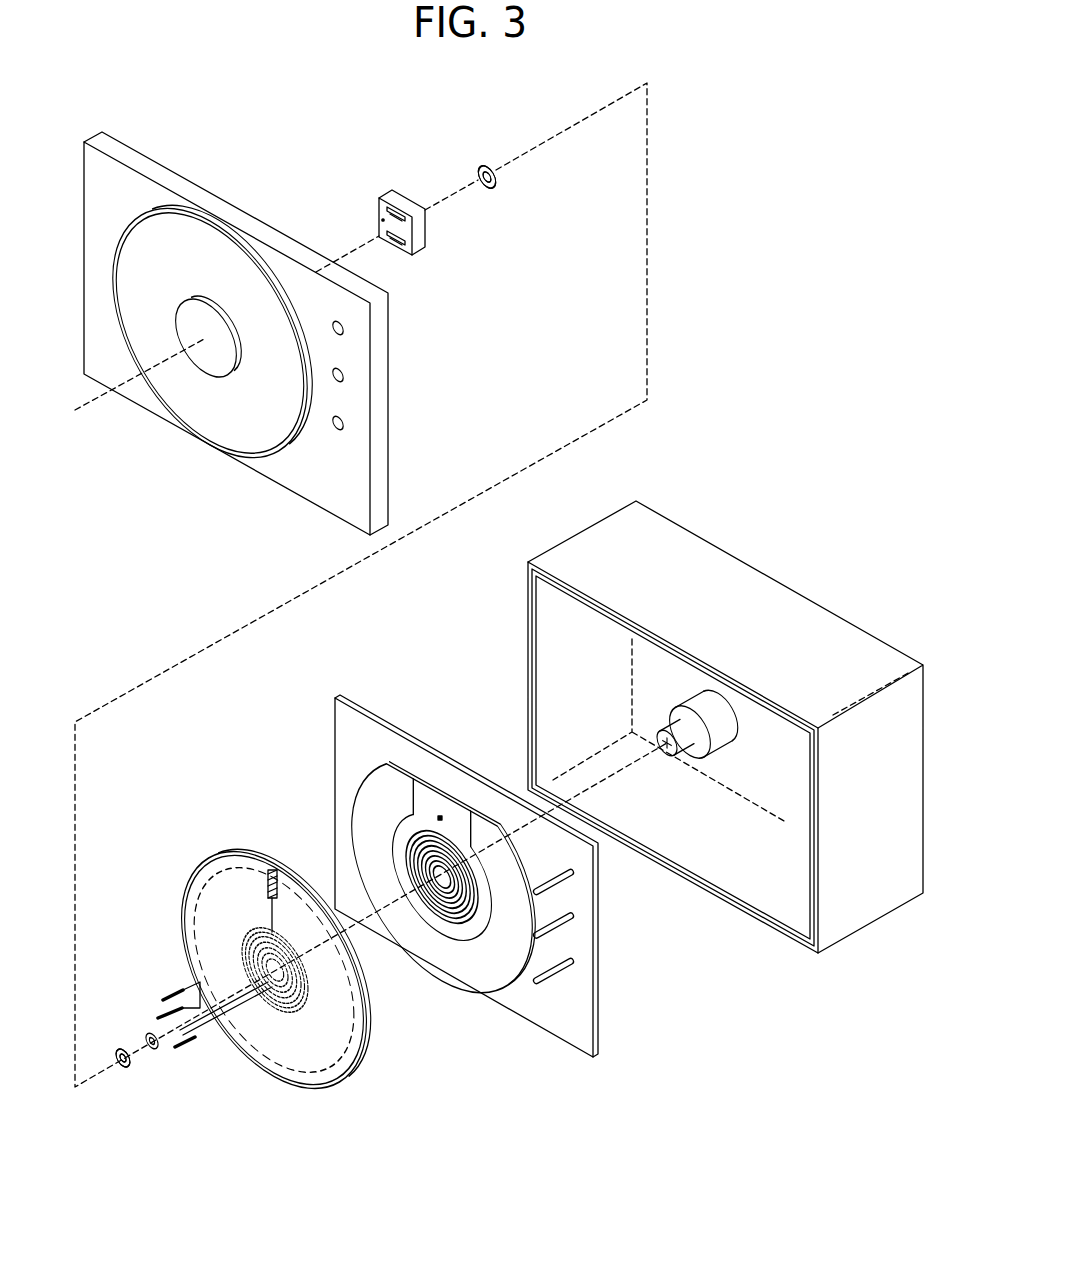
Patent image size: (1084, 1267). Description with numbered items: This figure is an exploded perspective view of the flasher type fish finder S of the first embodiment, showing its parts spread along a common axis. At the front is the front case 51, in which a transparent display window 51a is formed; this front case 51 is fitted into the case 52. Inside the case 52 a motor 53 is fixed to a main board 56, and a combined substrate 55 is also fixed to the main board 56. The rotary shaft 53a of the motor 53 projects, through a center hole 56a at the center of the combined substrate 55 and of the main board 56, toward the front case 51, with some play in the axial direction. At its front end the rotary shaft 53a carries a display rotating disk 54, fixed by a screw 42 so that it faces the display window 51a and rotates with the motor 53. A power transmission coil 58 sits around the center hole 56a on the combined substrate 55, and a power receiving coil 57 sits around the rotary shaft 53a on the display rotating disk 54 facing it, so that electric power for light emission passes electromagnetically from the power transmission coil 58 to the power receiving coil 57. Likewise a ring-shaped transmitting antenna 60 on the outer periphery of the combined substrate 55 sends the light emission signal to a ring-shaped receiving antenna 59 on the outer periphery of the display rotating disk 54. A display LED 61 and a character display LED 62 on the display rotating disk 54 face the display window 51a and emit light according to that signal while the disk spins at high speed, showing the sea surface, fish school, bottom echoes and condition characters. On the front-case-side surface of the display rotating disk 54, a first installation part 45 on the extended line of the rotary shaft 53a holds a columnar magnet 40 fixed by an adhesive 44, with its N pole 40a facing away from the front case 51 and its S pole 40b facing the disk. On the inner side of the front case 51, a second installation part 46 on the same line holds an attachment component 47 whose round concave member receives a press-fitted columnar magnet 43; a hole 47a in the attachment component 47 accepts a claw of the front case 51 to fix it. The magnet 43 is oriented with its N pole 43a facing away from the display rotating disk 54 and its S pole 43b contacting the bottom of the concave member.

The flasher type fish finder S is at (851, 229).
The magnet 40 is at (125, 1051).
The N pole 40a is at (114, 1053).
The S pole 40b is at (131, 1066).
The screw 42 is at (170, 993).
The magnet 43 is at (483, 170).
The N pole 43a is at (497, 167).
The S pole 43b is at (483, 187).
The adhesive 44 is at (158, 1046).
The first installation part 45 is at (250, 962).
The second installation part 46 is at (208, 365).
The attachment component 47 is at (393, 197).
The hole 47a is at (400, 253).
The front case 51 is at (275, 467).
The transparent display window 51a is at (288, 427).
The case 52 is at (845, 918).
The motor 53 is at (727, 732).
The rotary shaft 53a is at (675, 763).
The display rotating disk 54 is at (367, 1055).
The combined substrate 55 is at (475, 816).
The main board 56 is at (572, 1030).
The center hole 56a is at (438, 887).
The power receiving coil 57 is at (297, 1013).
The power transmission coil 58 is at (472, 913).
The receiving antenna 59 is at (343, 1087).
The transmitting antenna 60 is at (387, 780).
The display LED 61 is at (267, 887).
The character display LED 62 is at (270, 922).